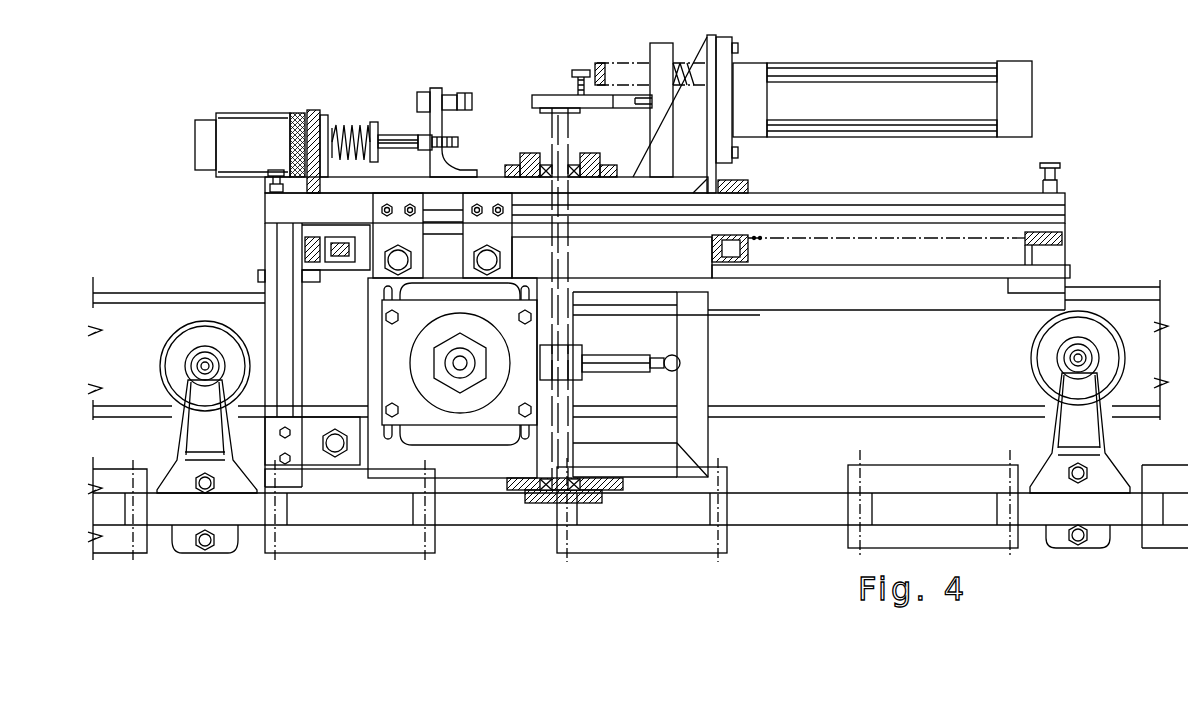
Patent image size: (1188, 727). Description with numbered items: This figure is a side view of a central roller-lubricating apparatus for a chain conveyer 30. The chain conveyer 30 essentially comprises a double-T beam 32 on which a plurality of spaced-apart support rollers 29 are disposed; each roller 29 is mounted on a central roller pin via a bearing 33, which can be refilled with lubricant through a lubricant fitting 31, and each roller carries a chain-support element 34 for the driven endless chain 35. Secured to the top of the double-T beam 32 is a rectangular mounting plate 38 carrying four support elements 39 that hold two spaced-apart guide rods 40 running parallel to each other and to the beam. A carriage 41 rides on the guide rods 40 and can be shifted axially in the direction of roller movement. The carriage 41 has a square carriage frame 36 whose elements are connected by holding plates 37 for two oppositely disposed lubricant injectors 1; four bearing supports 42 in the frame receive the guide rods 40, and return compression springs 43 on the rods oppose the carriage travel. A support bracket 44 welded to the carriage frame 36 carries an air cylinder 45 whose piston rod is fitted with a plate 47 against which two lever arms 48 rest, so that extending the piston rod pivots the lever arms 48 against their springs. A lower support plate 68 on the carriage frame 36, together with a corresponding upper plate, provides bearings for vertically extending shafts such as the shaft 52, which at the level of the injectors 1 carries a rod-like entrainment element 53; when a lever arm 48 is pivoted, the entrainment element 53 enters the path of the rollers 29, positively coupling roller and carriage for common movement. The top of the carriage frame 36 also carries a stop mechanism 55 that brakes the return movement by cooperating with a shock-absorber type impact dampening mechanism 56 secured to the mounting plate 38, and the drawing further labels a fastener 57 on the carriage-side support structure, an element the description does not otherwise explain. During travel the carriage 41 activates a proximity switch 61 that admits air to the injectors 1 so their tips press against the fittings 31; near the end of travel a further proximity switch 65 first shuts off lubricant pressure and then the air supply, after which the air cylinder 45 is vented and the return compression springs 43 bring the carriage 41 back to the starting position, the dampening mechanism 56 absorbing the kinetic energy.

The lubricant injector 1 is at (470, 383).
The support roller 29 is at (175, 383).
The chain conveyer 30 is at (108, 547).
The lubricant fitting 31 is at (195, 363).
The bearing 33 is at (192, 346).
The double-T beam 32 is at (180, 296).
The chain-support element 34 is at (194, 431).
The endless chain 35 is at (310, 541).
The carriage frame 36 is at (650, 468).
The holding plate 37 is at (752, 204).
The mounting plate 38 is at (262, 276).
The support element 39 is at (262, 192).
The guide rod 40 is at (865, 227).
The carriage 41 is at (725, 439).
The bearing support 42 is at (737, 190).
The return compression spring 43 is at (768, 240).
The support bracket 44 is at (700, 87).
The air cylinder 45 is at (1013, 70).
The plate 47 is at (665, 50).
The lever arm 48 is at (590, 100).
The vertically extending shaft 52 is at (552, 131).
The entrainment element 53 is at (605, 365).
The stop mechanism 55 is at (398, 140).
The impact dampening mechanism 56 is at (245, 118).
The fastening nut 57 is at (337, 433).
The proximity switch 61 is at (397, 262).
The proximity switch 65 is at (490, 262).
The support plate 68 is at (613, 490).